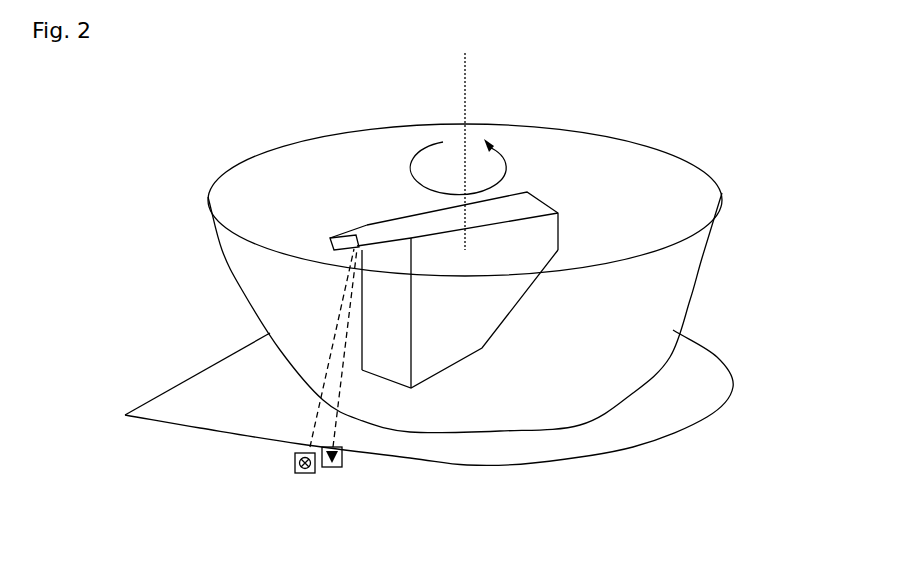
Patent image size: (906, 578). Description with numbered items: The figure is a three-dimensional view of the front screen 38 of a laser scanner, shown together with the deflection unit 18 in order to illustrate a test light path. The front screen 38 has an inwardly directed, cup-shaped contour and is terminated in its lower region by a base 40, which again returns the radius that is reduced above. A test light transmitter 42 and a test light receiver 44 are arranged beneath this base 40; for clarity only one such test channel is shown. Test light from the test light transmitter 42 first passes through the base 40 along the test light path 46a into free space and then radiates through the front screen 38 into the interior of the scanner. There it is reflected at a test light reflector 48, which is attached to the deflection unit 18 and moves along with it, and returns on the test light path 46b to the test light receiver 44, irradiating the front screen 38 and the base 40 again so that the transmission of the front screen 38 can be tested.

The deflection unit 18 is at (540, 245).
The front screen 38 is at (690, 182).
The base 40 is at (690, 412).
The test light transmitter 42 is at (295, 462).
The test light receiver 44 is at (340, 467).
The test light path 46a is at (310, 425).
The test light path 46b is at (342, 388).
The test light reflector 48 is at (332, 234).